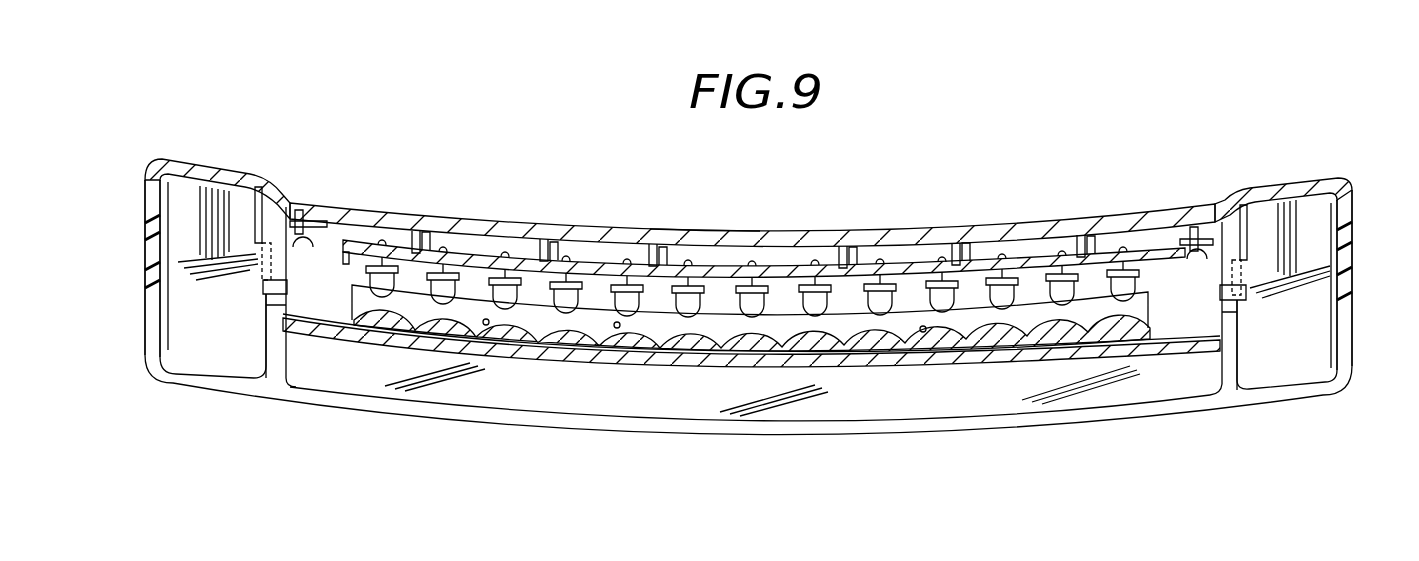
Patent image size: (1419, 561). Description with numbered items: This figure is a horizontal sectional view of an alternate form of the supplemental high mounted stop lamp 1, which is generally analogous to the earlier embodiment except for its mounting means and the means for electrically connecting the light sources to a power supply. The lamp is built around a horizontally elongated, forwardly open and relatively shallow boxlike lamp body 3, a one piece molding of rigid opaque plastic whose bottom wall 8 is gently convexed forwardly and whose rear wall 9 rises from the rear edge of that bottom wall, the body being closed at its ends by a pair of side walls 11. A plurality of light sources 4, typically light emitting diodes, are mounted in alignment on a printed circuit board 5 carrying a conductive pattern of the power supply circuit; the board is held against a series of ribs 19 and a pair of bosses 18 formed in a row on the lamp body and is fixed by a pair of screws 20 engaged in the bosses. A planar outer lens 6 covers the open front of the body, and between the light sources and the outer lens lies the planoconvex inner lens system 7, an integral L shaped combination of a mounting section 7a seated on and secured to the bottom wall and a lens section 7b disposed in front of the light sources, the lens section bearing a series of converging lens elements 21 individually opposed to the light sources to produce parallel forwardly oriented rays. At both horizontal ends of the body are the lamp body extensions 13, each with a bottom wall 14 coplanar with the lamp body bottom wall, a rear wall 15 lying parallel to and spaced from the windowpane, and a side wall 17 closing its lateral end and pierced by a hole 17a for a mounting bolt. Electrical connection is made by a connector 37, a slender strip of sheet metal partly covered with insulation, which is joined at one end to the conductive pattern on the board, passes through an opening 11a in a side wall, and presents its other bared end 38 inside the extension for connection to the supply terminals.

The supplemental high mounted stop lamp 1 is at (935, 180).
The lamp body 3 is at (517, 219).
The light sources 4 is at (372, 312).
The printed circuit board 5 is at (780, 265).
The outer lens 6 is at (677, 407).
The inner lens system 7 is at (883, 352).
The mounting section 7a is at (352, 294).
The lens section 7b is at (830, 345).
The bottom wall 8 is at (349, 268).
The rear wall 9 is at (693, 229).
The side walls 11 is at (267, 332).
The opening 11a is at (273, 296).
The lamp body extensions 13 is at (173, 162).
The bottom wall 14 is at (178, 376).
The rear wall 15 is at (217, 170).
The side wall 17 is at (145, 208).
The holes 17a is at (147, 241).
The bosses 18 is at (322, 220).
The ribs 19 is at (420, 234).
The screws 20 is at (304, 240).
The converging lens elements 21 is at (484, 325).
The connectors 37 is at (263, 285).
The bared end 38 is at (256, 245).